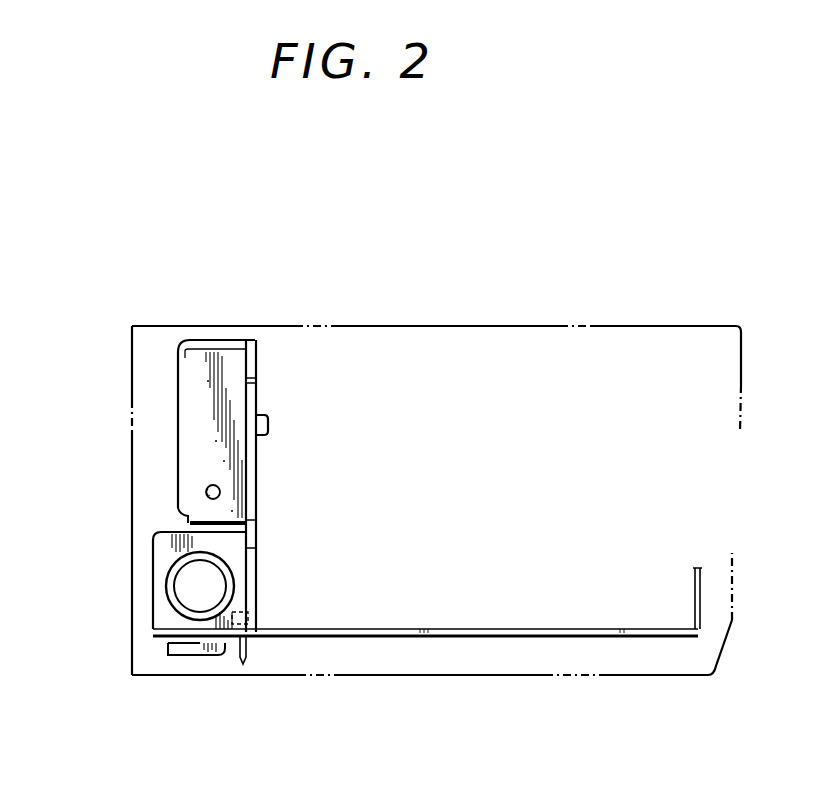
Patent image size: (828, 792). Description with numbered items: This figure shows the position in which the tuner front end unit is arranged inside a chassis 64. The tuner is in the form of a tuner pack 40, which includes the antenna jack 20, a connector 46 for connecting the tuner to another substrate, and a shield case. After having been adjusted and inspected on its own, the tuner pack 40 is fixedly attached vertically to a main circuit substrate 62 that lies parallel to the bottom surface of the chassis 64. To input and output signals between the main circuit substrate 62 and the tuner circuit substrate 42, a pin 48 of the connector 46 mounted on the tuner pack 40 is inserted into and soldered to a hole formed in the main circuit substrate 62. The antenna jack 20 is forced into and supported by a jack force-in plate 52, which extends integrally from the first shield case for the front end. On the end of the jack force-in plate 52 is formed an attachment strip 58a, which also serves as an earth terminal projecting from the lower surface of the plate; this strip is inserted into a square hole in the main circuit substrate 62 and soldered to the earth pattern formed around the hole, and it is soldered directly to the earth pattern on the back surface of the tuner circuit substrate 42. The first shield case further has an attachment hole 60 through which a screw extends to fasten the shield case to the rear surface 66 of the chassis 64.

The antenna jack 20 is at (185, 593).
The tuner pack 40 is at (178, 418).
The tuner circuit substrate 42 is at (252, 513).
The connector 46 is at (256, 616).
The pin 48 is at (250, 657).
The jack force-in plate 52 is at (162, 550).
The attachment strip 58a is at (192, 653).
The attachment hole 60 is at (206, 490).
The main circuit substrate 62 is at (540, 640).
The chassis 64 is at (392, 326).
The rear surface 66 is at (410, 660).